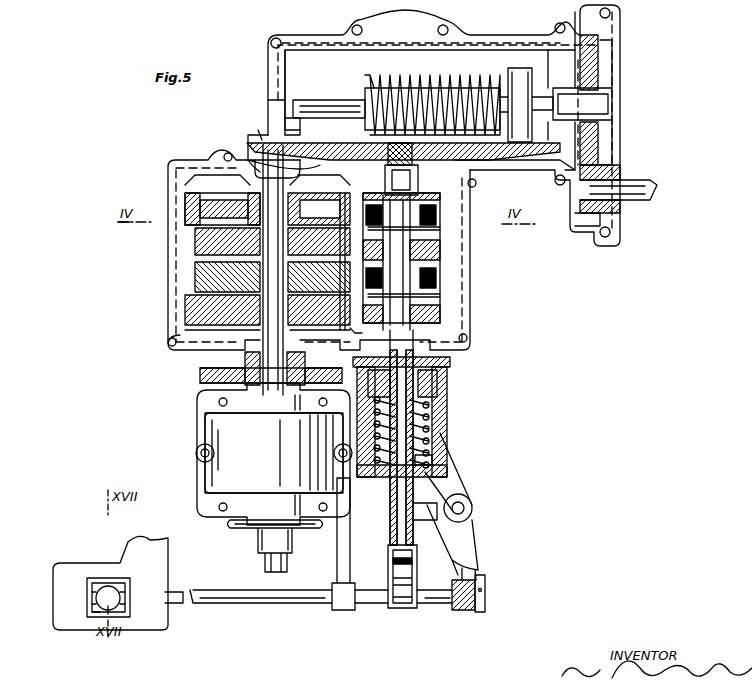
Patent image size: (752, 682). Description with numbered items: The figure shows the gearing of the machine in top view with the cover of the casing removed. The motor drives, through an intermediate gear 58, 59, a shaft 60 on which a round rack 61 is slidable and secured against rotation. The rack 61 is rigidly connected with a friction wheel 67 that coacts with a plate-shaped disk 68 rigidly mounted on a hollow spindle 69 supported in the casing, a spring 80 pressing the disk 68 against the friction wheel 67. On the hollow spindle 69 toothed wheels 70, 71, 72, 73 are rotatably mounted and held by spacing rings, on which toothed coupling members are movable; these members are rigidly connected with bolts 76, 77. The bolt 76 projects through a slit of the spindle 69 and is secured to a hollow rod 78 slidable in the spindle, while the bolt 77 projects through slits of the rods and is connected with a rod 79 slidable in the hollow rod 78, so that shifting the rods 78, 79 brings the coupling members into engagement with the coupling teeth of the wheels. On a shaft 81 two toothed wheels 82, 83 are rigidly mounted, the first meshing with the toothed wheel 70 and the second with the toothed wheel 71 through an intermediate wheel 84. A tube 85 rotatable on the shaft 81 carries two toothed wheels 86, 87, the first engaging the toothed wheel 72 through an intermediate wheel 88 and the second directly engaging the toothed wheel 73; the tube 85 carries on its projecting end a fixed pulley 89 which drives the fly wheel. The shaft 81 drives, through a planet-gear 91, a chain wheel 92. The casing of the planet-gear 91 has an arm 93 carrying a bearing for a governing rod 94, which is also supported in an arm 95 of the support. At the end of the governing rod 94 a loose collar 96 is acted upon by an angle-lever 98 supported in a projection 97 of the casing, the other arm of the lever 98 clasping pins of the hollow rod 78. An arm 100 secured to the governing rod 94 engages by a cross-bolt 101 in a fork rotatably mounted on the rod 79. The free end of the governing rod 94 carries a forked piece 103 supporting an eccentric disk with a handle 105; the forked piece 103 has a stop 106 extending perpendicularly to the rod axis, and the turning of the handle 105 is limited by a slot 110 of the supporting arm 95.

The intermediate gear 58 is at (594, 218).
The intermediate gear 59 is at (598, 52).
The shaft 60 is at (322, 98).
The rack 61 is at (392, 86).
The friction wheel 67 is at (525, 72).
The plate-shaped disk 68 is at (255, 140).
The hollow spindle 69 is at (380, 182).
The toothed wheel 70 is at (440, 210).
The toothed wheel 71 is at (440, 258).
The toothed wheel 72 is at (440, 278).
The toothed wheel 73 is at (440, 318).
The bolt 76 is at (440, 229).
The bolt 77 is at (440, 296).
The hollow rod 78 is at (428, 406).
The rod 79 is at (392, 530).
The spring 80 is at (440, 458).
The shaft 81 is at (244, 148).
The toothed wheel 82 is at (185, 205).
The toothed wheel 83 is at (195, 242).
The intermediate wheel 84 is at (352, 330).
The tube 85 is at (250, 345).
The toothed wheel 86 is at (195, 280).
The toothed wheel 87 is at (185, 314).
The intermediate wheel 88 is at (300, 276).
The pulley 89 is at (205, 380).
The planet-gear 91 is at (274, 454).
The chain wheel 92 is at (250, 529).
The arm 93 is at (337, 552).
The governing rod 94 is at (240, 592).
The arm 95 is at (147, 540).
The loose collar 96 is at (466, 610).
The projection 97 is at (460, 490).
The angle-lever 98 is at (472, 541).
The arm 100 is at (390, 585).
The cross-bolt 101 is at (412, 561).
The forked piece 103 is at (104, 582).
The handle 105 is at (110, 586).
The stop 106 is at (120, 618).
The slot 110 is at (94, 613).